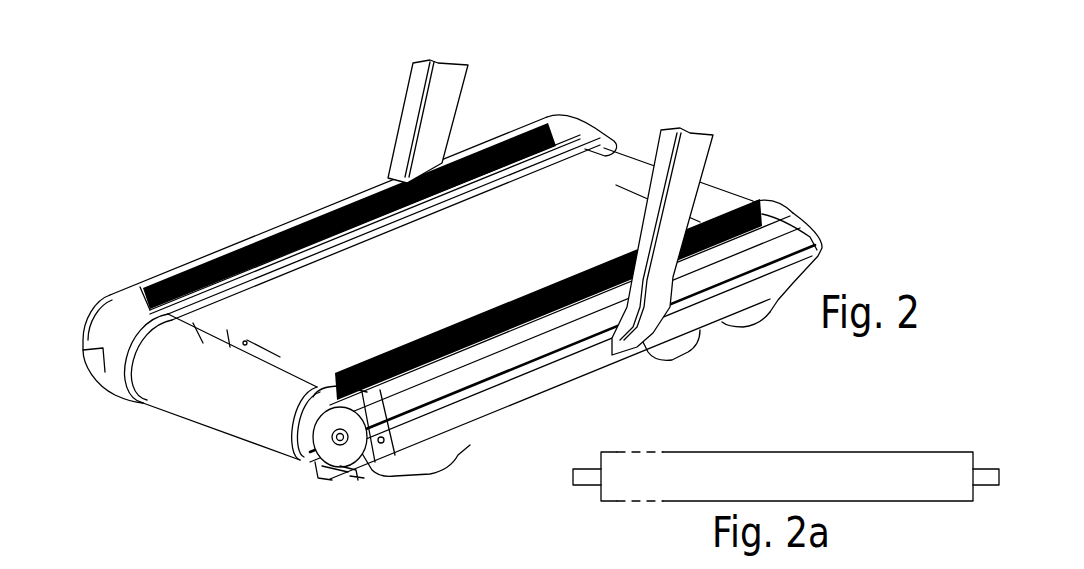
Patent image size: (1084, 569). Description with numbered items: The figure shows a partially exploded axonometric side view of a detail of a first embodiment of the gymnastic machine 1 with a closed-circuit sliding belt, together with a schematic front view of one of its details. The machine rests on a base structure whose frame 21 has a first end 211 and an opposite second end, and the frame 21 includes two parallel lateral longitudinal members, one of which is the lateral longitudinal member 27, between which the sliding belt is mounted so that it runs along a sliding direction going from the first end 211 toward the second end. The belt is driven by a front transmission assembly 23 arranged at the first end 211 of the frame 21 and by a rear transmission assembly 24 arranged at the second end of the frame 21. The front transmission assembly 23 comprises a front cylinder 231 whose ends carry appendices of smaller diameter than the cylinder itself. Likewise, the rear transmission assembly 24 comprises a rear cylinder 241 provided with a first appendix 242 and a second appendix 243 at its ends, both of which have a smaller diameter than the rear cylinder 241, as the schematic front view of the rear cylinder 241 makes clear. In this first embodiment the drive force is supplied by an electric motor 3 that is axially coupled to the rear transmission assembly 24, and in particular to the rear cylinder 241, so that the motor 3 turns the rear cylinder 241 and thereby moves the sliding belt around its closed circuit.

In FIG. 2, the gymnastic machine 1 is at (470, 285).
In FIG. 2, the frame 21 is at (560, 114).
In FIG. 2, the first end 211 is at (779, 203).
In FIG. 2, the front transmission assembly 23 is at (724, 156).
In FIG. 2, the front cylinder 231 is at (732, 192).
In FIG. 2, the rear transmission assembly 24 is at (200, 466).
In FIG. 2, the rear cylinder 241 is at (172, 408).
In FIG. 2A, the rear cylinder 241 is at (748, 452).
In FIG. 2A, the first appendix 242 is at (987, 487).
In FIG. 2A, the second appendix 243 is at (573, 478).
In FIG. 2, the lateral longitudinal member 27 is at (527, 389).
In FIG. 2, the electric motor 3 is at (346, 492).